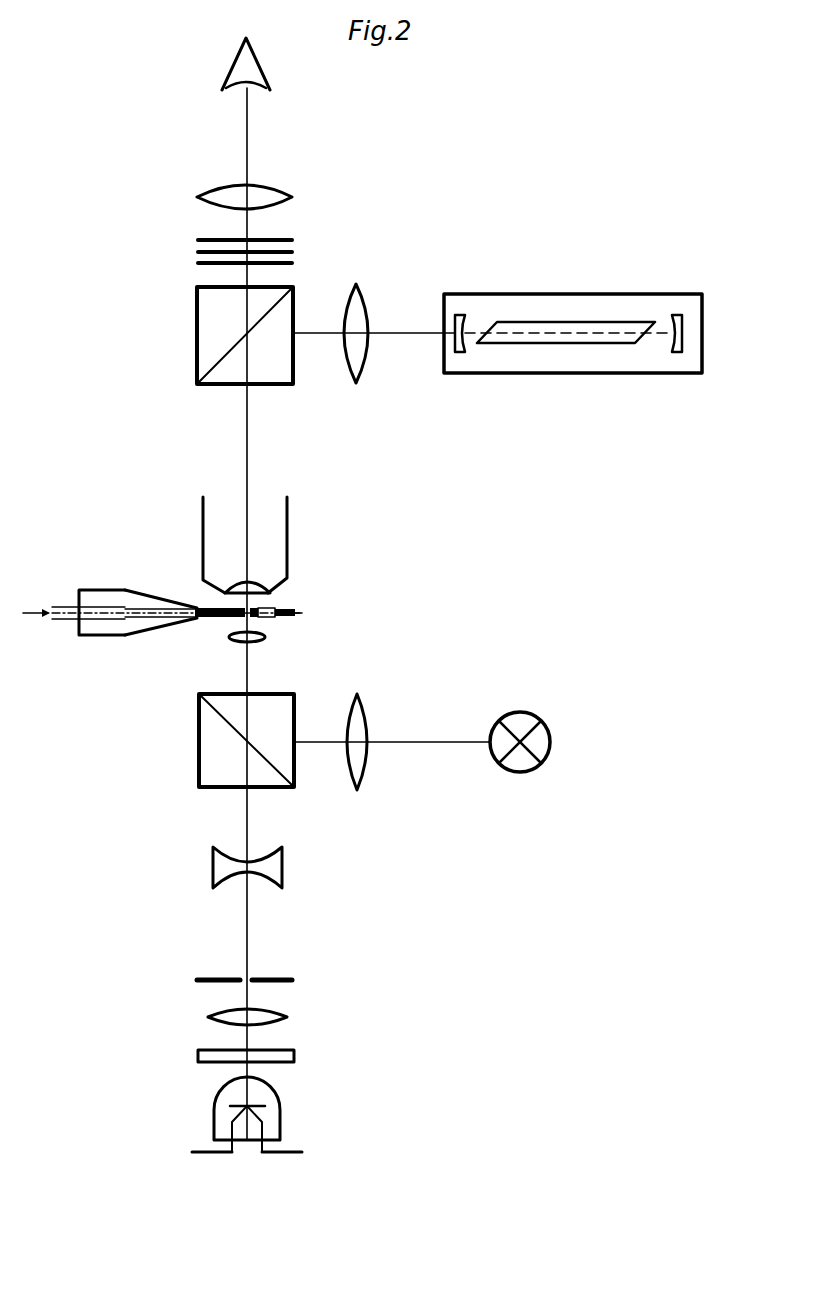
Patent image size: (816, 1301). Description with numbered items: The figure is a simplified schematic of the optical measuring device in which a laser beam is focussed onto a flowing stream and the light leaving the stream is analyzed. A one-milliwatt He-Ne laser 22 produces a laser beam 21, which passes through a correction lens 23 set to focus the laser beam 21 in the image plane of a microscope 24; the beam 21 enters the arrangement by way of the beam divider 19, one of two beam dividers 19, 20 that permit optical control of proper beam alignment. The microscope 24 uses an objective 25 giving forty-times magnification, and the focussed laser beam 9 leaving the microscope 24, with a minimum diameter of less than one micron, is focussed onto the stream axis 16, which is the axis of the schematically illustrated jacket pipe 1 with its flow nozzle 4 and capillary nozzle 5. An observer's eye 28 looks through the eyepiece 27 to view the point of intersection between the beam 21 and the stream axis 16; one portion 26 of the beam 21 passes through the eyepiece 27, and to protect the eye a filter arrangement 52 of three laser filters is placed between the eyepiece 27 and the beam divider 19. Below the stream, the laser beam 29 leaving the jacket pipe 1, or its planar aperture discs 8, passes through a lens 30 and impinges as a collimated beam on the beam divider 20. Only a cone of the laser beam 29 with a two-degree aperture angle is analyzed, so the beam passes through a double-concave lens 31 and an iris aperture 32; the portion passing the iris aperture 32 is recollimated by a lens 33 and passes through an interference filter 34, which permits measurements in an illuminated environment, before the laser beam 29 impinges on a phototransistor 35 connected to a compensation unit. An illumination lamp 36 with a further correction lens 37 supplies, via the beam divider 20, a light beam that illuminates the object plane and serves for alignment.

The jacket pipe 1 is at (155, 623).
The flow nozzle 4 is at (145, 610).
The capillary nozzle 5 is at (198, 608).
The planar aperture discs 8 is at (248, 620).
The focussed laser beam 9 is at (250, 598).
The stream axis 16 is at (287, 617).
The beam divider 19 is at (275, 378).
The beam divider 20 is at (288, 775).
The laser beam 21 is at (410, 336).
The He-Ne laser 22 is at (640, 362).
The correction lens 23 is at (355, 370).
The microscope 24 is at (277, 520).
The objective 25 is at (268, 580).
The beam portion 26 is at (243, 274).
The eyepiece 27 is at (275, 195).
The eye 28 is at (235, 62).
The laser beam 29 is at (220, 622).
The lens 30 is at (238, 641).
The double-concave lens 31 is at (270, 868).
The iris aperture 32 is at (197, 980).
The lens 33 is at (288, 1017).
The interference filter 34 is at (198, 1055).
The phototransistor 35 is at (215, 1112).
The illumination lamp 36 is at (517, 723).
The correction lens 37 is at (363, 712).
The filter arrangement 52 is at (293, 251).